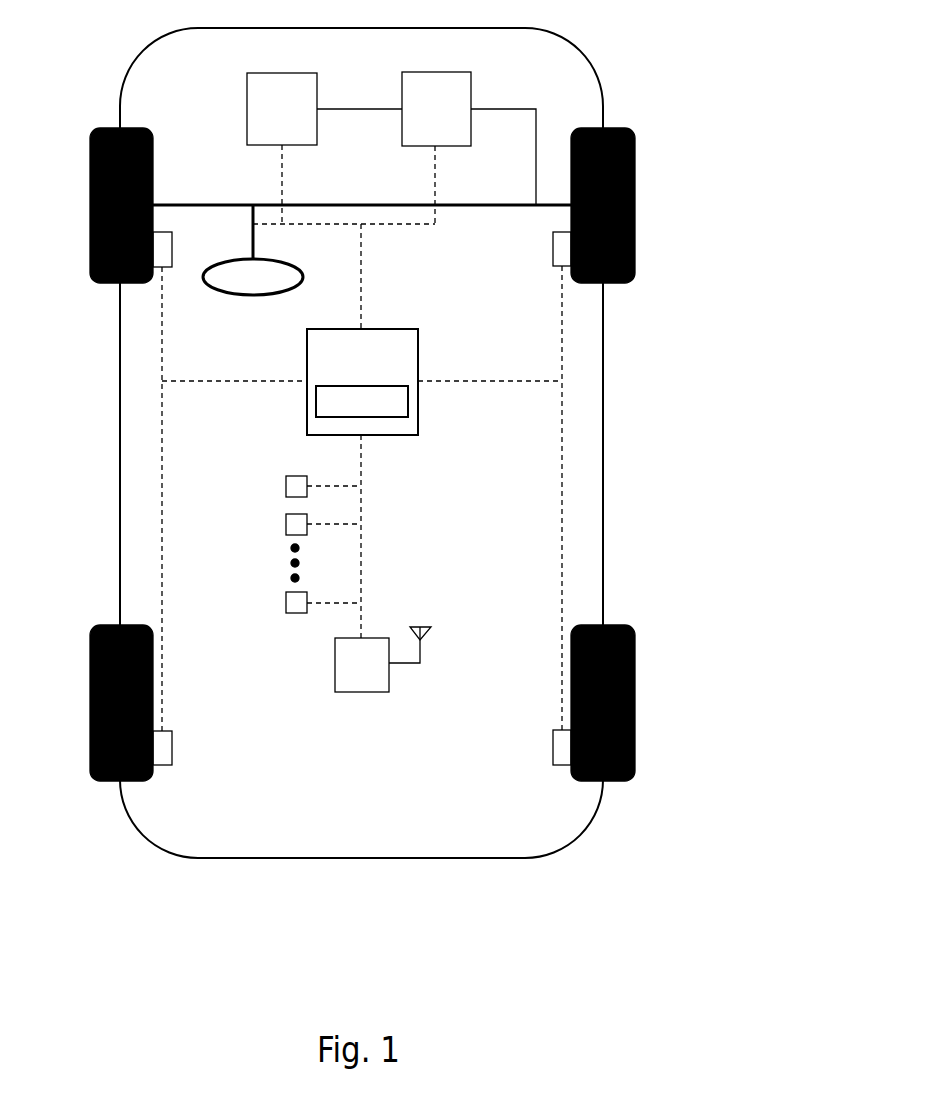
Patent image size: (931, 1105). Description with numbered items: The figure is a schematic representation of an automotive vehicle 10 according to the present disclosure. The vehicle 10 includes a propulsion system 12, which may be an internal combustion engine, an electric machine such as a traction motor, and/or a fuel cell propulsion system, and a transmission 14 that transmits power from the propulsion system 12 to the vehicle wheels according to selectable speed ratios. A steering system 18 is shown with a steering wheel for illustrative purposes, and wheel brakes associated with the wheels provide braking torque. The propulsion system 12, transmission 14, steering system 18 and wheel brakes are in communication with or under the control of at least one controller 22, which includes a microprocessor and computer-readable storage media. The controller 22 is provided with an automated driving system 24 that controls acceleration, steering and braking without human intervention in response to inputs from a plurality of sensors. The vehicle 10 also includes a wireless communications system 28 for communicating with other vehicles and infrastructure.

The automotive vehicle 10 is at (729, 97).
The propulsion system 12 is at (247, 115).
The transmission 14 is at (471, 82).
The steering system 18 is at (253, 297).
The controller 22 is at (418, 385).
The automated driving system 24 is at (395, 417).
The wireless communications system 28 is at (357, 692).